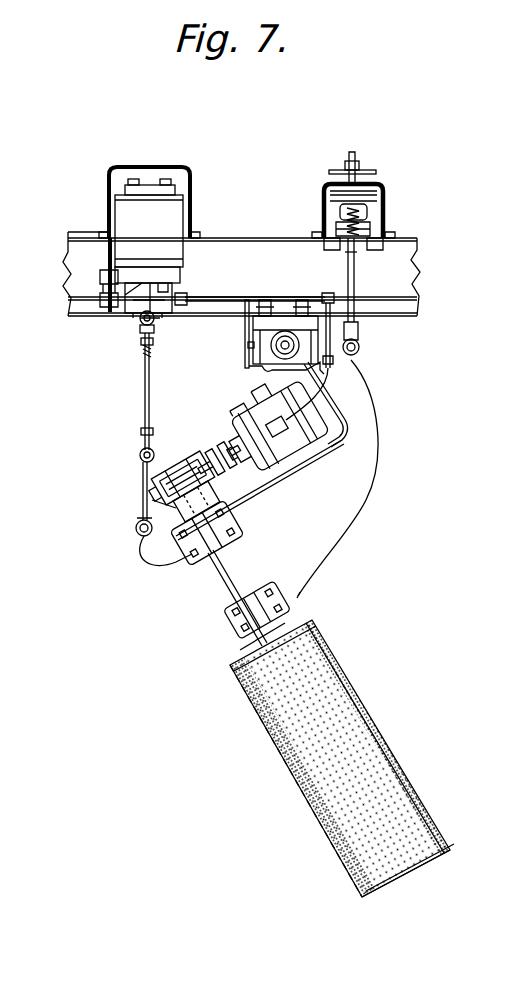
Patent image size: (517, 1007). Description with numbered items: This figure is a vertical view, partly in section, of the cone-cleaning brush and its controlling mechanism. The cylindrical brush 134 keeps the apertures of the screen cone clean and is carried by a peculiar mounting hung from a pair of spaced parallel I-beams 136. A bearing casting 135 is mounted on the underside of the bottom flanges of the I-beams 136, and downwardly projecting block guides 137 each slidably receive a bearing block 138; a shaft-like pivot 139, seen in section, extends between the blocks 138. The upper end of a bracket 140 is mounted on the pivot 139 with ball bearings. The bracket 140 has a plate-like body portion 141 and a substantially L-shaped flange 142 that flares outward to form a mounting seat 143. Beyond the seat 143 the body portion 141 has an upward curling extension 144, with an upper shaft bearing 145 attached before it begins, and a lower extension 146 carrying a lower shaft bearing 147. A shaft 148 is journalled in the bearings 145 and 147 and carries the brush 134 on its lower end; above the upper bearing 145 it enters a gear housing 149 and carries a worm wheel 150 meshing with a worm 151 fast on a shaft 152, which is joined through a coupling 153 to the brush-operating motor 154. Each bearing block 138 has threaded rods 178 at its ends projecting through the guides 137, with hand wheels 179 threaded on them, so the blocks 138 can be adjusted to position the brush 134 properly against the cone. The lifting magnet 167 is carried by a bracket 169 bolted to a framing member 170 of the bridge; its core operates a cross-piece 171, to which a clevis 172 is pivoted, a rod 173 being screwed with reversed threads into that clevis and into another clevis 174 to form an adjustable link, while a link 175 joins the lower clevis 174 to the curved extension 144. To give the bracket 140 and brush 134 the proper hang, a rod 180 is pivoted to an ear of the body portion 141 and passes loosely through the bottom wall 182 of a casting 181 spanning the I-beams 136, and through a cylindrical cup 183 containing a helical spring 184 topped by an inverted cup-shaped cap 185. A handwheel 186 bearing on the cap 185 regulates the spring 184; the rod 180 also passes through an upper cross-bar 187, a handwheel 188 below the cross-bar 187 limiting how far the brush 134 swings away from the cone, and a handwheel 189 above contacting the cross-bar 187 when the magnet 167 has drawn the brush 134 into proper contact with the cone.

The cylindrical brush 134 is at (405, 781).
The bearing casting 135 is at (283, 320).
The I-beams 136 is at (256, 238).
The block guides 137 is at (256, 362).
The bearing block 138 is at (280, 358).
The shaft-like pivot 139 is at (258, 332).
The bracket 140 is at (387, 476).
The body portion 141 is at (340, 508).
The flange 142 is at (345, 438).
The mounting seat 143 is at (255, 488).
The upward curling extension 144 is at (148, 548).
The upper shaft bearing 145 is at (195, 560).
The lower extension 146 is at (235, 605).
The lower shaft bearing 147 is at (250, 636).
The shaft 148 is at (232, 582).
The gear housing 149 is at (137, 523).
The worm wheel 150 is at (200, 486).
The worm 151 is at (152, 480).
The shaft 152 is at (208, 462).
The coupling 153 is at (221, 448).
The brush-operating motor 154 is at (290, 450).
The lifting magnet 167 is at (149, 217).
The bracket 169 is at (180, 272).
The framing member 170 is at (108, 258).
The cross-piece 171 is at (141, 321).
The clevis 172 is at (140, 343).
The rod 173 is at (145, 386).
The clevis 174 is at (140, 452).
The link 175 is at (162, 514).
The threaded rods 178 is at (358, 352).
The hand wheels 179 is at (262, 322).
The rod 180 is at (358, 272).
The casting 181 is at (324, 200).
The bottom wall 182 is at (346, 256).
The cylindrical cup 183 is at (335, 222).
The helical spring 184 is at (364, 224).
The cap 185 is at (368, 212).
The handwheel 186 is at (379, 200).
The upper cross-bar 187 is at (328, 186).
The handwheel 188 is at (376, 172).
The handwheel 189 is at (355, 162).